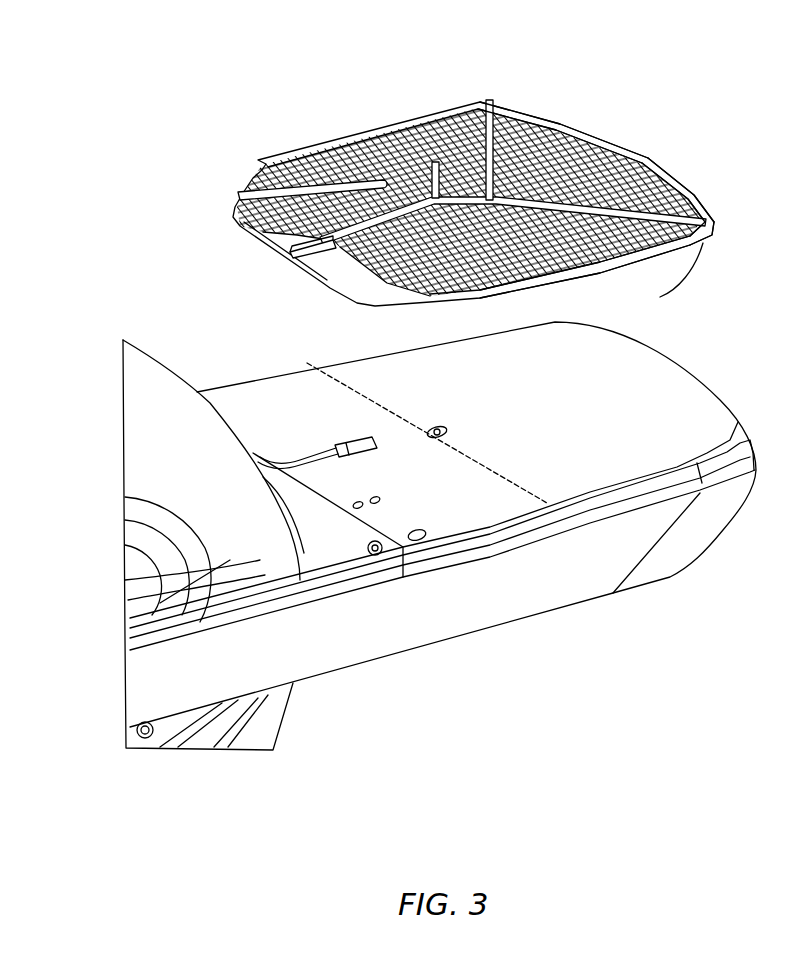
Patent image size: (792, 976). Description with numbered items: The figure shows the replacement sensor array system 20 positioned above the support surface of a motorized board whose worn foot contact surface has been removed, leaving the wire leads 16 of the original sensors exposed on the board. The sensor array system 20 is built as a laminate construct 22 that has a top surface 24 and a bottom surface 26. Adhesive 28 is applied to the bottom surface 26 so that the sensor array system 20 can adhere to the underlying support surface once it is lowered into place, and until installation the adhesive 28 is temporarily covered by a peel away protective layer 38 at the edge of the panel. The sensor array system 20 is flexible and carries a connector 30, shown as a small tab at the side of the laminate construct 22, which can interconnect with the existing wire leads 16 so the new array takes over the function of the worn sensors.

The wire leads 16 is at (350, 437).
The sensor array system 20 is at (480, 181).
The laminate construct 22 is at (687, 166).
The top surface 24 is at (705, 212).
The bottom surface 26 is at (607, 272).
The adhesive 28 is at (693, 241).
The connector 30 is at (262, 246).
The peel away protective layer 38 is at (681, 272).